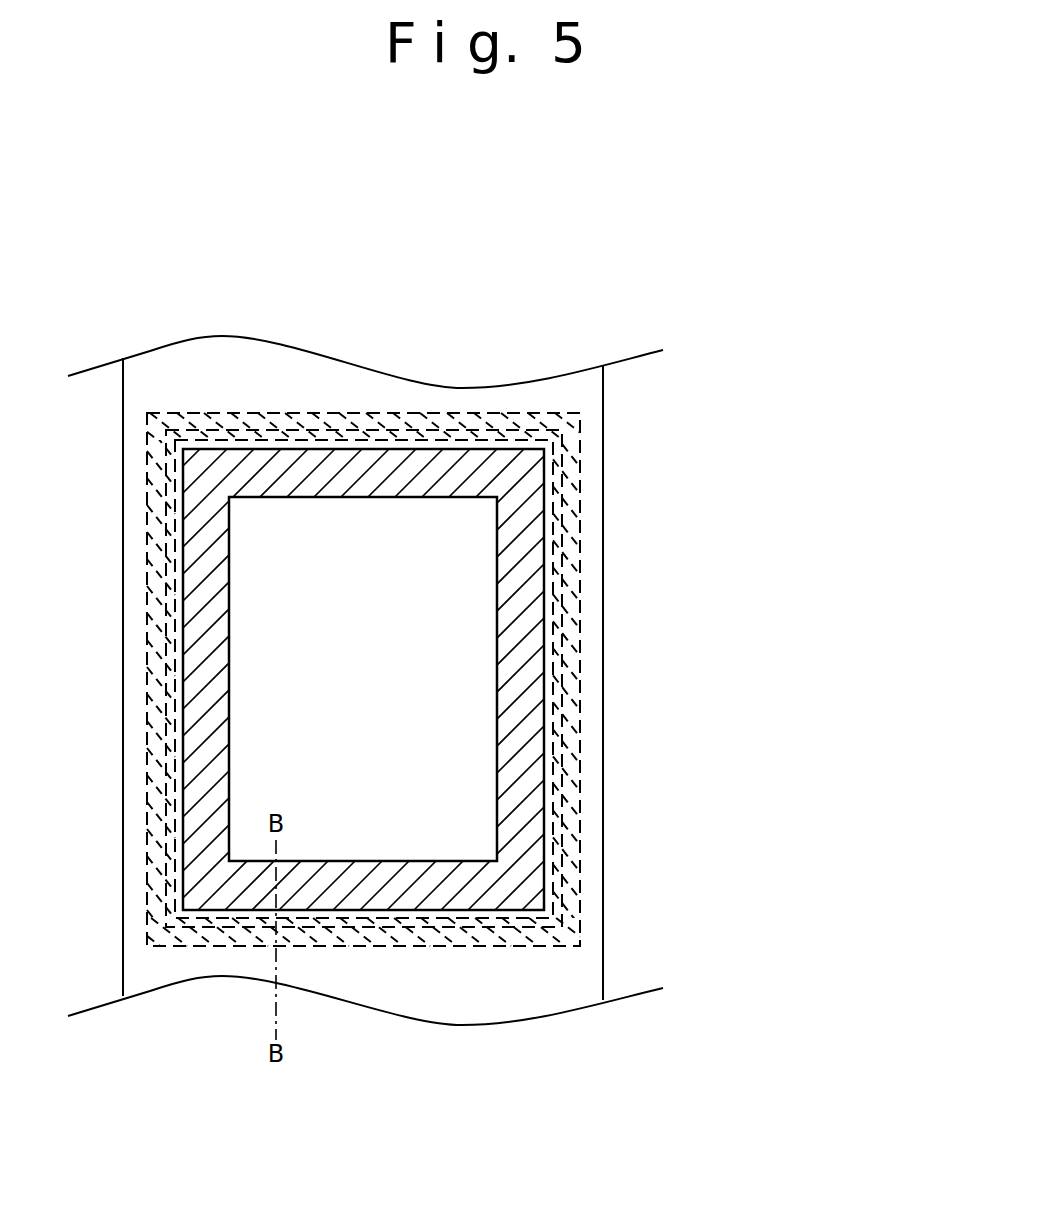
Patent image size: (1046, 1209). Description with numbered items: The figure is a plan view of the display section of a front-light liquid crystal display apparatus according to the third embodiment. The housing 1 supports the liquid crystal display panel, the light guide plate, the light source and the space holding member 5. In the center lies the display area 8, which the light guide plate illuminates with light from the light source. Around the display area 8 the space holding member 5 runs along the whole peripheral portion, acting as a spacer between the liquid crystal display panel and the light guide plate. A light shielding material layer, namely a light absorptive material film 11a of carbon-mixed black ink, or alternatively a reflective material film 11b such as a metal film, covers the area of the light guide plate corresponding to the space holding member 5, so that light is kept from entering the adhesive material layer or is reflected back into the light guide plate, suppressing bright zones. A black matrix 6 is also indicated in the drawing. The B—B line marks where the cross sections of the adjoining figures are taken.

The housing 1 is at (587, 973).
The space holding member 5 is at (573, 713).
The black matrix 6 is at (523, 633).
The display area 8 is at (463, 560).
The light absorptive material film 11a is at (573, 795).
The reflective material film 11b is at (522, 679).